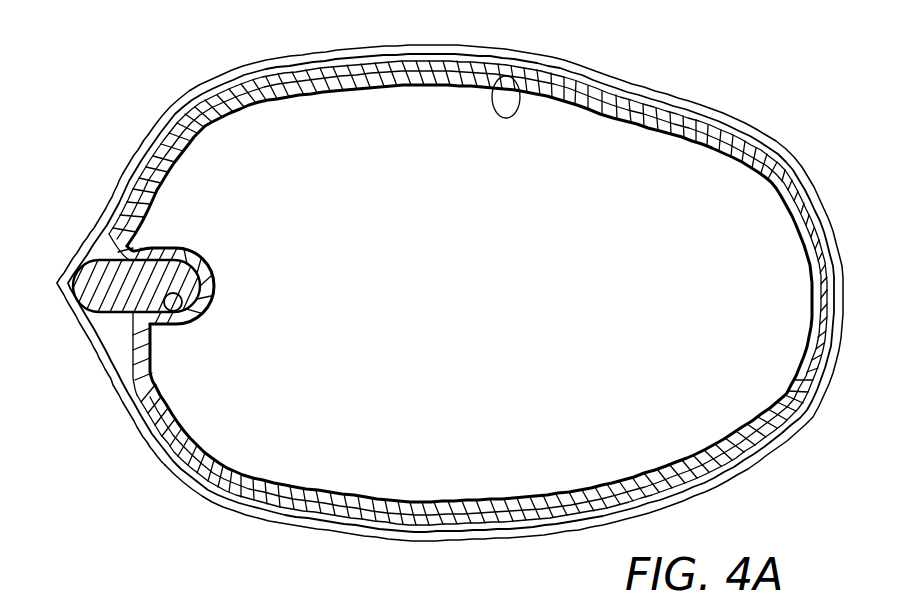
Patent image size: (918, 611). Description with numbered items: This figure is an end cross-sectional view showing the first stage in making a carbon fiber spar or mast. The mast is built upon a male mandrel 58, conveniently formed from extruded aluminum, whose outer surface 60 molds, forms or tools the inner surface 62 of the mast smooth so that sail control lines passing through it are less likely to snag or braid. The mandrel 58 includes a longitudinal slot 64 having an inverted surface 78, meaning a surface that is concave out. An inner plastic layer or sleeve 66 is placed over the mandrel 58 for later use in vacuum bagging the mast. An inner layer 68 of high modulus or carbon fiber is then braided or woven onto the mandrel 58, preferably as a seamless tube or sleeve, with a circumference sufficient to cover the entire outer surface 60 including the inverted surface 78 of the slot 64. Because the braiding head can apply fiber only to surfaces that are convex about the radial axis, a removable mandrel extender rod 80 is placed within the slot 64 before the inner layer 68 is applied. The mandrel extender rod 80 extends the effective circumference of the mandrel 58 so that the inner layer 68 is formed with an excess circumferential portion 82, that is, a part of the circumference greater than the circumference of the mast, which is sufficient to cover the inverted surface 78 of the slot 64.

The male mandrel 58 is at (760, 180).
The outer surface of mandrel 60 is at (148, 378).
The inner surface of the mast 62 is at (520, 96).
The longitudinal slot 64 is at (177, 248).
The inner plastic layer or sleeve 66 is at (664, 108).
The inner layer 68 is at (780, 166).
The inverted surface 78 is at (187, 334).
The mandrel extender rod 80 is at (104, 278).
The excess circumferential portion 82 is at (83, 328).